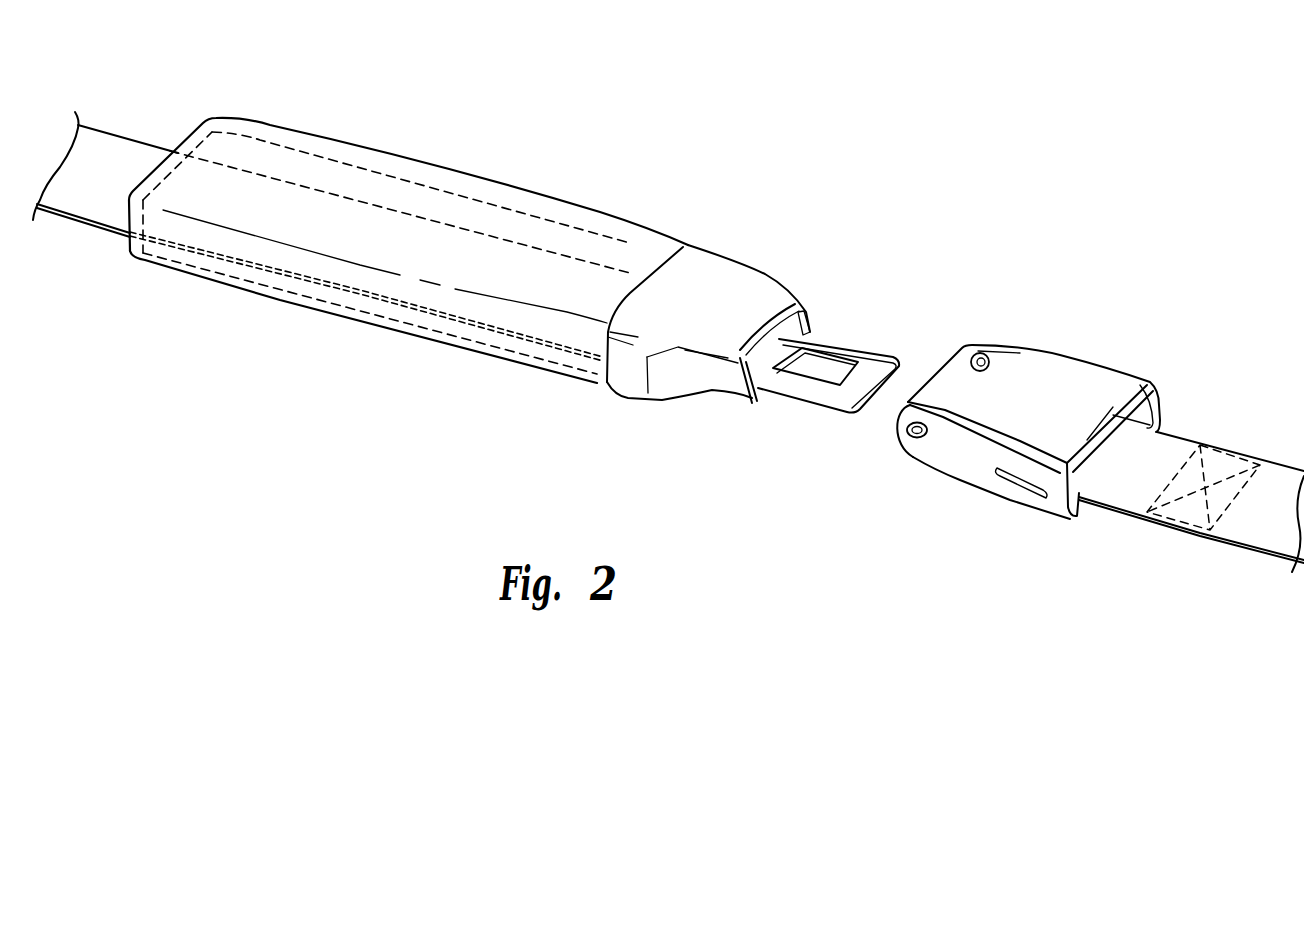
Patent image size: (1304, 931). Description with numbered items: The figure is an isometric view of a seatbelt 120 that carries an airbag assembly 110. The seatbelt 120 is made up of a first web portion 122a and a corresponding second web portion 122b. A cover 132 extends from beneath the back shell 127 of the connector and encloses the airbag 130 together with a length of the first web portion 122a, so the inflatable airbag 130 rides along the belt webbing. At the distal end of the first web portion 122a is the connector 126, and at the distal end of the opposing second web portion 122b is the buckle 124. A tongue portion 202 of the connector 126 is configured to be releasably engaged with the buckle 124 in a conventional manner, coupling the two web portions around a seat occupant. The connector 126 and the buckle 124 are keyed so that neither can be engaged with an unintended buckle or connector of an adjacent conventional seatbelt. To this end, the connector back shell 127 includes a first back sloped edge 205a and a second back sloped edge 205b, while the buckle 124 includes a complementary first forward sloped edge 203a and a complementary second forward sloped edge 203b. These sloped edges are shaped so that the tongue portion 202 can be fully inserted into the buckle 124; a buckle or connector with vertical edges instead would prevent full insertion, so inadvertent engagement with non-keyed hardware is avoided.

The airbag assembly 110 is at (507, 149).
The seatbelt 120 is at (807, 462).
The first web portion 122a is at (118, 146).
The second web portion 122b is at (1273, 470).
The buckle 124 is at (1045, 326).
The connector 126 is at (816, 280).
The back shell 127 is at (622, 378).
The airbag 130 is at (238, 284).
The cover 132 is at (603, 213).
The tongue portion 202 is at (882, 356).
The first forward sloped edge 203a is at (983, 396).
The second forward sloped edge 203b is at (903, 447).
The first back sloped edge 205a is at (822, 327).
The second back sloped edge 205b is at (757, 403).